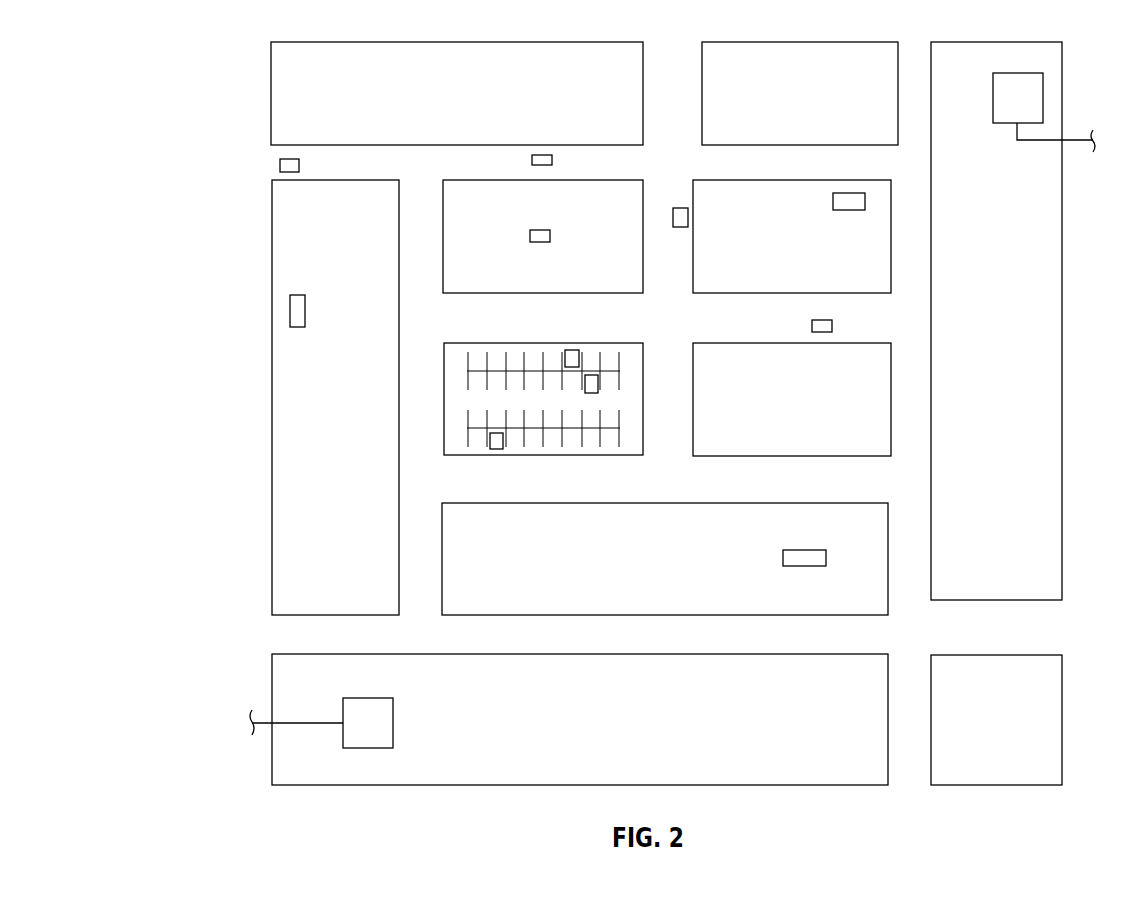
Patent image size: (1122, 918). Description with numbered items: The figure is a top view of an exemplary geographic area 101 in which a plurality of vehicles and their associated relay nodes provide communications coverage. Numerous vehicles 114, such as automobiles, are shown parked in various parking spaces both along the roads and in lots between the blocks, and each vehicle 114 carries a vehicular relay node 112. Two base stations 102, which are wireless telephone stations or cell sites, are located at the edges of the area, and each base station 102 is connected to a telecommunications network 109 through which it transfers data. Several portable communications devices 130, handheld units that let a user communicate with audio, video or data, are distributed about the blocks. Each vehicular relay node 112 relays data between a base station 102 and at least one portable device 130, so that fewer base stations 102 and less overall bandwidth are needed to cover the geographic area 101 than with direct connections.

The geographic area 101 is at (163, 84).
The base station 102 is at (1043, 98).
The telecommunications network 109 is at (1037, 143).
The vehicular relay node 112 is at (282, 164).
The vehicle 114 is at (300, 166).
The portable communications device 130 is at (298, 295).